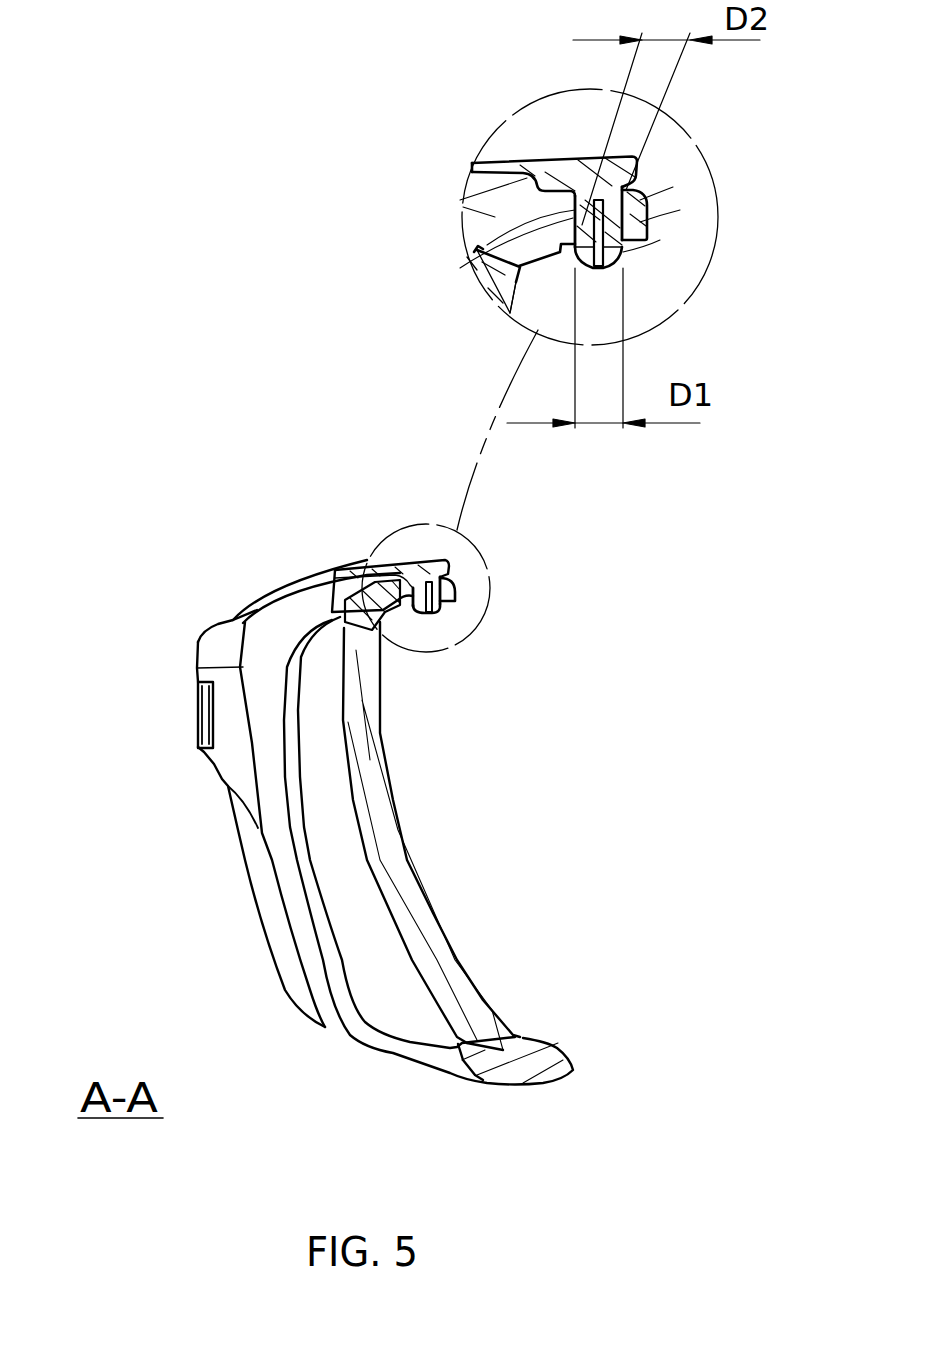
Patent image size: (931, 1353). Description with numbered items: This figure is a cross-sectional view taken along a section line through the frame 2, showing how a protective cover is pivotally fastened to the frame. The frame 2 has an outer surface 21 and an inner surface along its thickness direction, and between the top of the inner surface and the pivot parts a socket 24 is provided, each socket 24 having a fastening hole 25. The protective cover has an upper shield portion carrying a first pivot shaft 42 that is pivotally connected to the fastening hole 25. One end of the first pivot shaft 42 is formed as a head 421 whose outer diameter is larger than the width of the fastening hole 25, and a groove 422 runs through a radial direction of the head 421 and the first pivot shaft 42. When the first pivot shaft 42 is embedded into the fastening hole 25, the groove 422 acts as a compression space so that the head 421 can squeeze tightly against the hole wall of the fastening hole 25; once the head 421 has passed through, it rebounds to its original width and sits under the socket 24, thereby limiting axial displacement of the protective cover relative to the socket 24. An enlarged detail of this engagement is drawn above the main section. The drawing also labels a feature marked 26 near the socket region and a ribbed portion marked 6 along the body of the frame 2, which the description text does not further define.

The frame 2 is at (468, 200).
The outer surface 21 is at (315, 577).
The socket 24 is at (647, 218).
The fastening hole 25 is at (622, 192).
The rib 26 is at (410, 605).
The reinforcing rib 6 is at (382, 825).
The first pivot shaft 42 is at (478, 268).
The head 421 is at (508, 297).
The groove 422 is at (628, 249).